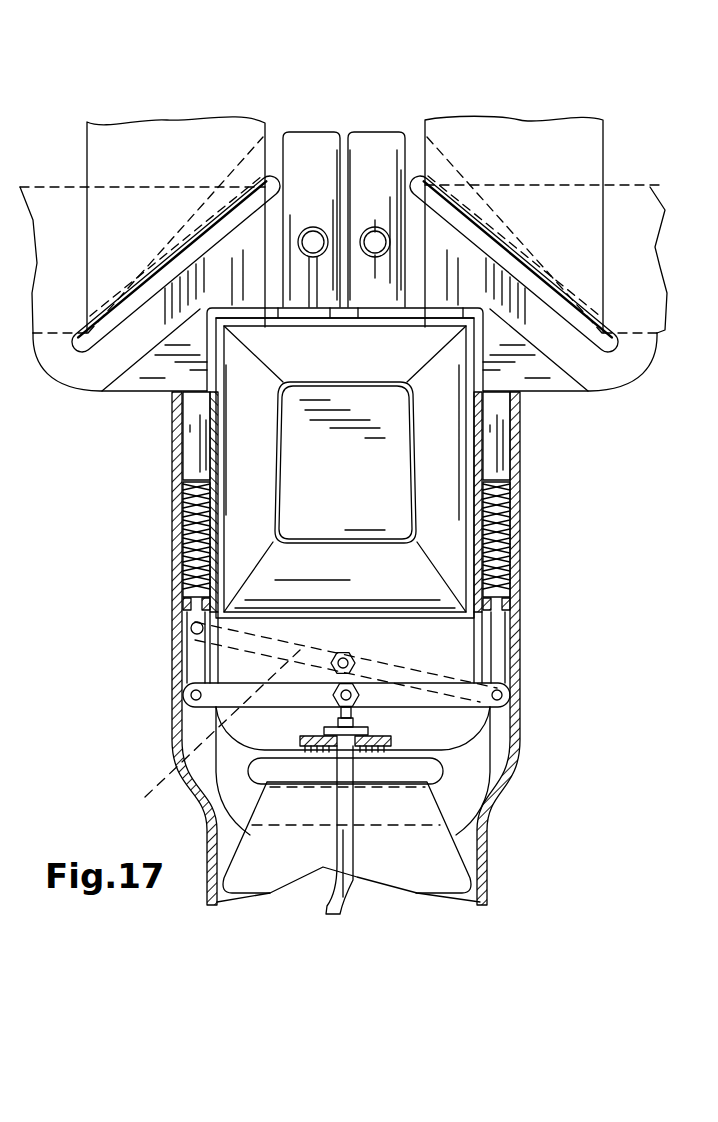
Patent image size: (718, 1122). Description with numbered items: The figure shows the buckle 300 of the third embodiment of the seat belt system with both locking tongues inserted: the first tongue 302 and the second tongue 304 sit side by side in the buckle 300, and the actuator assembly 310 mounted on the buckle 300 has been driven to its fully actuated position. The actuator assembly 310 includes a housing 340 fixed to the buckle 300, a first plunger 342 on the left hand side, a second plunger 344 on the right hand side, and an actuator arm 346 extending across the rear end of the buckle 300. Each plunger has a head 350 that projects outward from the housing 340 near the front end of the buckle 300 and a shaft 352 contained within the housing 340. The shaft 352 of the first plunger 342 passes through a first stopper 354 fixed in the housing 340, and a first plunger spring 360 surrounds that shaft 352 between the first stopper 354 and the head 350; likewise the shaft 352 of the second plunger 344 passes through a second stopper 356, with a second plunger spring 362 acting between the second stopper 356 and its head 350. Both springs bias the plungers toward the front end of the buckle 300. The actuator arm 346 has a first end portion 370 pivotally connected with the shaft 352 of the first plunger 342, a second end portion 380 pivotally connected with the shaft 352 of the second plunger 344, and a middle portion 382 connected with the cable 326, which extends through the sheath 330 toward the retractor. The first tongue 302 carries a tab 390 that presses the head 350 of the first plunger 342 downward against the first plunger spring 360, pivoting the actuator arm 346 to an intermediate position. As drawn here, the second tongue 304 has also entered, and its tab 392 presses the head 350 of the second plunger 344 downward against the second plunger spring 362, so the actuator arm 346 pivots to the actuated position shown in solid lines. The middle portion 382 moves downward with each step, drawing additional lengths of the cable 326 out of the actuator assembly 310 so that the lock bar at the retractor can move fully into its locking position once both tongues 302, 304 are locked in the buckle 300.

The buckle 300 is at (274, 312).
The first tongue 302 is at (313, 127).
The second tongue 304 is at (377, 127).
The actuator assembly 310 is at (165, 498).
The cable 326 is at (318, 935).
The sheath 330 is at (354, 906).
The housing 340 is at (178, 690).
The first plunger 342 is at (165, 436).
The second plunger 344 is at (528, 443).
The actuator arm 346 is at (206, 737).
The head 350 is at (195, 455).
The shaft 352 is at (183, 535).
The first stopper 354 is at (185, 610).
The second stopper 356 is at (520, 605).
The first plunger spring 360 is at (180, 563).
The second plunger spring 362 is at (490, 558).
The first end portion 370 is at (268, 697).
The second end portion 380 is at (497, 710).
The middle portion 382 is at (318, 699).
The tab 390 is at (153, 378).
The tab 392 is at (578, 372).